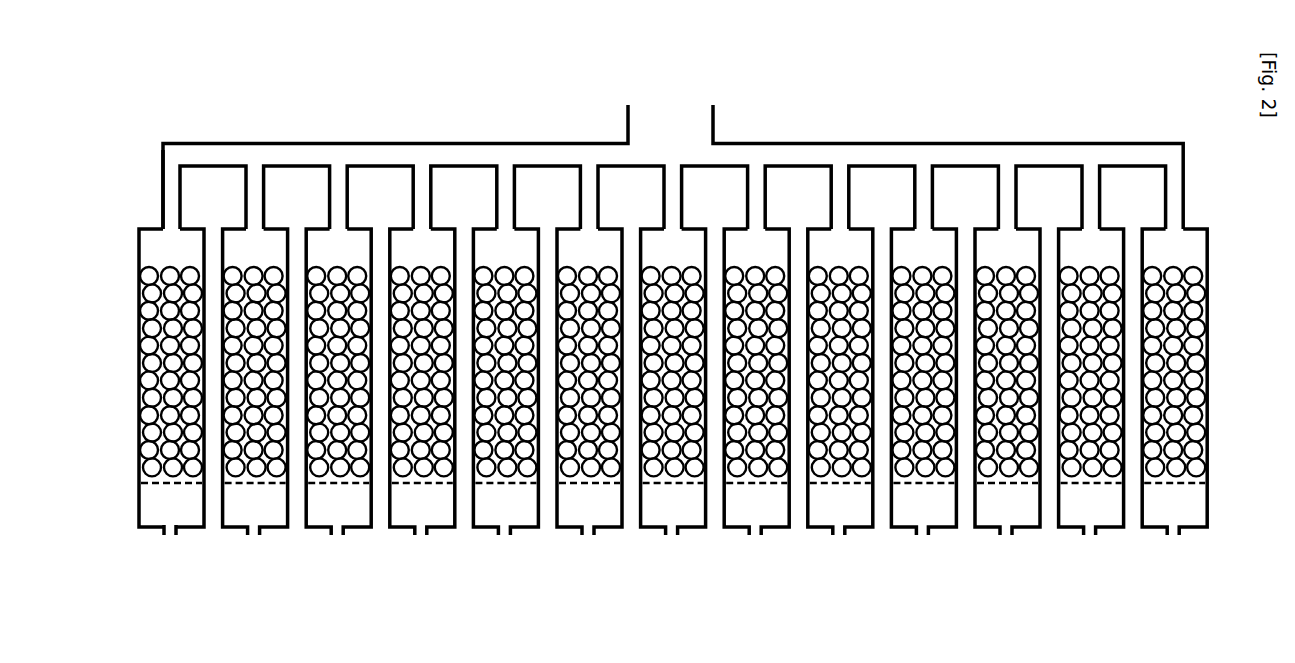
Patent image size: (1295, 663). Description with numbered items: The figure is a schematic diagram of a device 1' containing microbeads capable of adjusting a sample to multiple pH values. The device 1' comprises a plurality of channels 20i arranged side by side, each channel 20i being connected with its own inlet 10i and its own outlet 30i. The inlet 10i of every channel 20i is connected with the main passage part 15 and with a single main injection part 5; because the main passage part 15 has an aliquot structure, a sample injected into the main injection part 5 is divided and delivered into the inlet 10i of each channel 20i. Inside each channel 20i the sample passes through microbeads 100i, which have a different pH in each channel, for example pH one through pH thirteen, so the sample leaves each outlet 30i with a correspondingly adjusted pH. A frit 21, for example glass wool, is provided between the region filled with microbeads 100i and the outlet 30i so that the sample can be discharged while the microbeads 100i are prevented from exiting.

The device containing microbeads capable of multiple pH adjustment of a sample 1' is at (633, 322).
The main injection part 5 is at (627, 123).
The main passage part 15 is at (778, 142).
The inlet 10i is at (166, 205).
The channel 20i is at (150, 263).
The microbeads 100i is at (140, 332).
The frit 21 is at (153, 517).
The outlet 30i is at (170, 537).